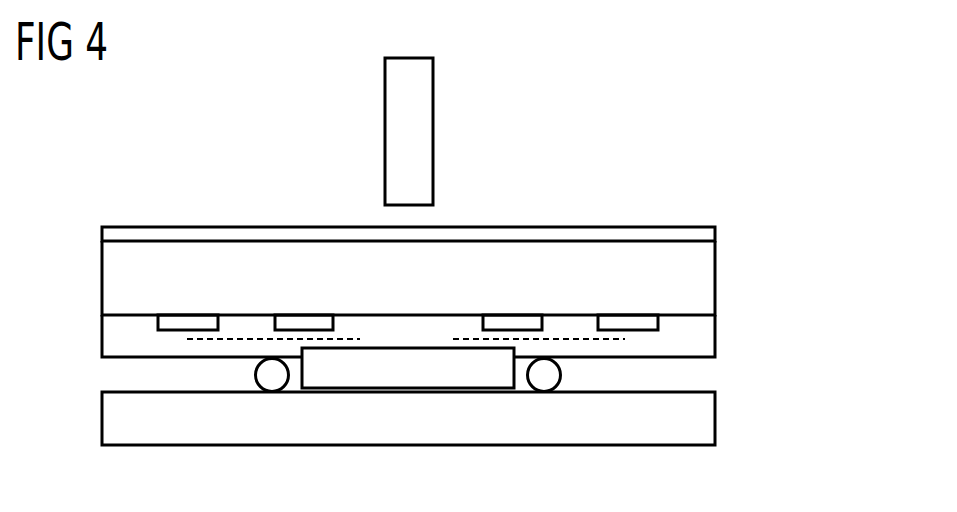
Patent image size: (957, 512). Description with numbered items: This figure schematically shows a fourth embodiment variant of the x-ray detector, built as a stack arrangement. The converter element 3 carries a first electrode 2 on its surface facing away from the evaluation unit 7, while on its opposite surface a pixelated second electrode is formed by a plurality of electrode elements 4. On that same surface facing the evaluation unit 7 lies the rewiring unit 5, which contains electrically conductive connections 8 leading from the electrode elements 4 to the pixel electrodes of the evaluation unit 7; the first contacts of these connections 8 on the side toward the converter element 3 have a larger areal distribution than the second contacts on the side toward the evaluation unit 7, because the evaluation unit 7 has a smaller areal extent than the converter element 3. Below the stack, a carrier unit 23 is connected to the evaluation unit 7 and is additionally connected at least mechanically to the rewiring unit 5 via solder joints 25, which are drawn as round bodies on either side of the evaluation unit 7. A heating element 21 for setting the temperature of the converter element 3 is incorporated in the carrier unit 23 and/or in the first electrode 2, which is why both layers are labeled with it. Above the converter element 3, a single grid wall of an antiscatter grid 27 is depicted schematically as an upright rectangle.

The first electrode 2 is at (707, 233).
The heating element 21 is at (467, 337).
The converter element 3 is at (707, 278).
The electrode elements 4 is at (189, 322).
The rewiring unit 5 is at (707, 333).
The evaluation unit 7 is at (403, 388).
The electrically conductive connection 8 is at (244, 339).
The carrier unit 23 is at (707, 417).
The solder joints 25 is at (255, 367).
The antiscatter grid 27 is at (434, 127).